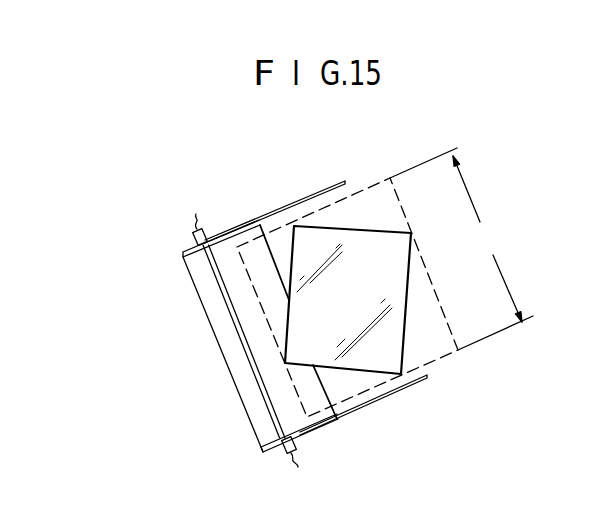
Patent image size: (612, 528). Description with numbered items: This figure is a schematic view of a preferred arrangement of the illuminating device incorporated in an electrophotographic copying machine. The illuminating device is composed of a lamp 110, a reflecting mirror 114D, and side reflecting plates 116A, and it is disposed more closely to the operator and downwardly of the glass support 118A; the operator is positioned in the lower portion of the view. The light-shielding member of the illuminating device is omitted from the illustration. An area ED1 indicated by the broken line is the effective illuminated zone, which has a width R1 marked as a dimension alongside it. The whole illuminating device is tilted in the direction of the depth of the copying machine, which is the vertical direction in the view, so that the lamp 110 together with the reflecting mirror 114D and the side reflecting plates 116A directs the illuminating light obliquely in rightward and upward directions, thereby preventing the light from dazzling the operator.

The lamp 110 is at (245, 350).
The reflecting mirror 114D is at (212, 325).
The side reflecting plates 116A is at (313, 198).
The glass support 118A is at (390, 225).
The effective illuminated zone ED1 is at (398, 200).
The width of effective illuminated zone R1 is at (461, 249).